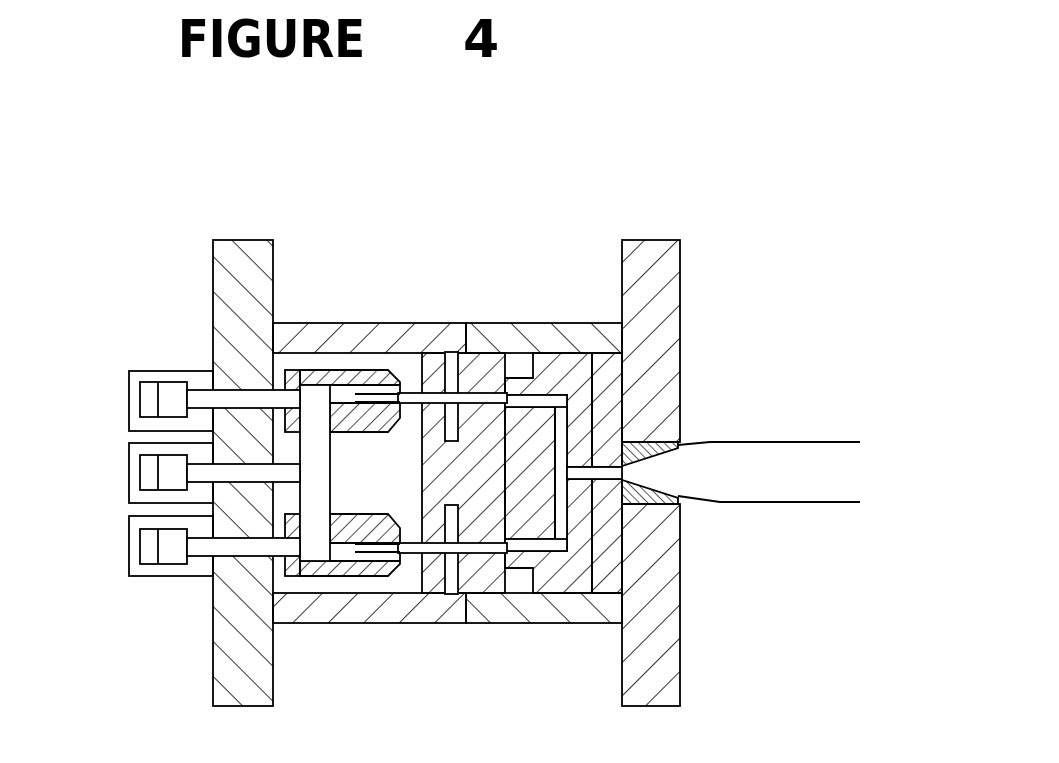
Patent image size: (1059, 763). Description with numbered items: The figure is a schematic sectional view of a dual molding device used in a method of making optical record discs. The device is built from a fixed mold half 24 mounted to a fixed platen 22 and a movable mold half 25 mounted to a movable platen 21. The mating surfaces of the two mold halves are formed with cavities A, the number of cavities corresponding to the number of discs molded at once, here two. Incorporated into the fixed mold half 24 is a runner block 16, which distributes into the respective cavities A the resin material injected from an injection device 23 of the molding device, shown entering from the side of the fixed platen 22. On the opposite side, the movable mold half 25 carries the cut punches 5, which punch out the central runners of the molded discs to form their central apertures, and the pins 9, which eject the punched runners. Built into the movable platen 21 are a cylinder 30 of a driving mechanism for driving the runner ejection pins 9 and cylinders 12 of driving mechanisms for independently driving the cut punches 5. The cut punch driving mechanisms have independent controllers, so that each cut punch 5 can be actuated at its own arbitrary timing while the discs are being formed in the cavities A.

The movable platen 21 is at (240, 311).
The fixed platen 22 is at (653, 281).
The injection device 23 is at (787, 468).
The fixed mold half 24 is at (520, 352).
The runner block 16 is at (562, 572).
The movable mold half 25 is at (357, 347).
The cut punch 5 is at (381, 372).
The pin 9 is at (344, 400).
The cavity A is at (455, 354).
The cylinder 12 is at (132, 398).
The cylinder 30 is at (131, 470).